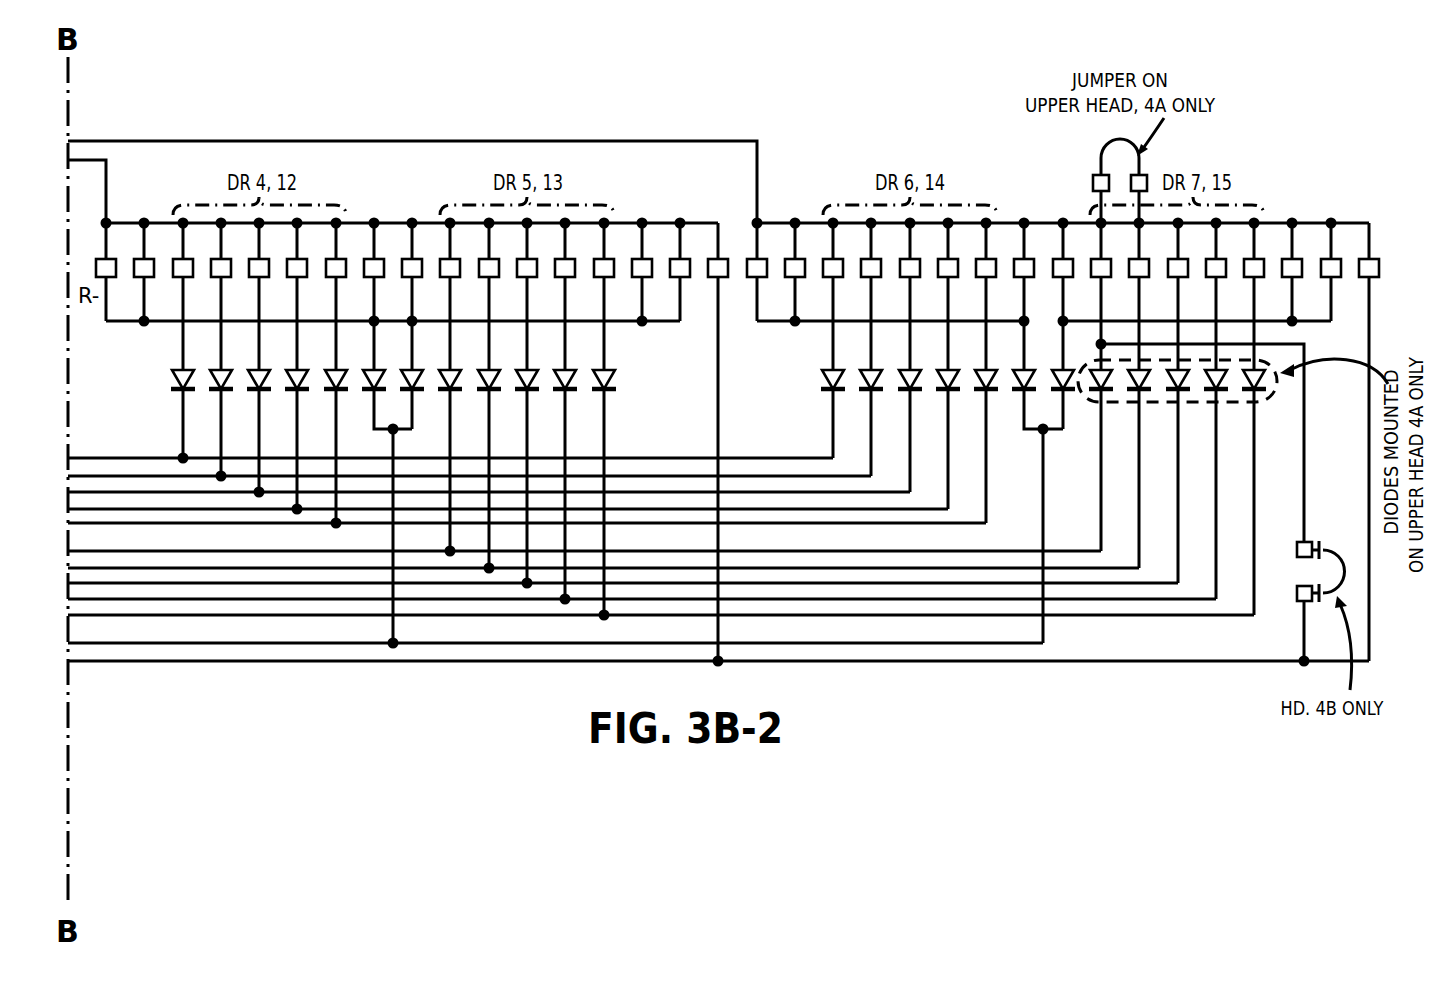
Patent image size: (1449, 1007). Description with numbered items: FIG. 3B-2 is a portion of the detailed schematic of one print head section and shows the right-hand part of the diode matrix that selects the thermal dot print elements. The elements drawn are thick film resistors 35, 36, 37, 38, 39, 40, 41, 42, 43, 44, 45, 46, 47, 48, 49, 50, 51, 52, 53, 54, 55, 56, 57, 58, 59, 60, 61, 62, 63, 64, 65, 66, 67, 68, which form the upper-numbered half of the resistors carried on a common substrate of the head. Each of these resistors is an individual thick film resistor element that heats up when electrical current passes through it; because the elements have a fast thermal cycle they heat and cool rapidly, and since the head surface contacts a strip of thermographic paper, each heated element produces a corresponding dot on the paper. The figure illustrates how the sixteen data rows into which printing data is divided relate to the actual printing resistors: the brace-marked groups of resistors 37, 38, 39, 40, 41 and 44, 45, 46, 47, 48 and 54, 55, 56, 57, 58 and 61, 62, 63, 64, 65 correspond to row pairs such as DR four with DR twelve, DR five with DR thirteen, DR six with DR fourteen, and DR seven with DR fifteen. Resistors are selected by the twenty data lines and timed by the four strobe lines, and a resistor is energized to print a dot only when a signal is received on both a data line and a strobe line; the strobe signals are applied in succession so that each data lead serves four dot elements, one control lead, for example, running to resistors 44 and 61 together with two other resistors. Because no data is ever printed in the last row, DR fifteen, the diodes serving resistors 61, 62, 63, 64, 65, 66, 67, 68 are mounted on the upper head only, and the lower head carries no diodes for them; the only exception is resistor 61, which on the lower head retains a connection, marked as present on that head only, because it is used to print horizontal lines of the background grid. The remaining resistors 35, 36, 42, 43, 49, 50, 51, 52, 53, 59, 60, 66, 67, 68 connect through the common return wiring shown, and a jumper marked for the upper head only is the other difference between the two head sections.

The thick film resistor 35 is at (113, 270).
The thick film resistor 36 is at (151, 272).
The thick film resistor 37 is at (189, 341).
The thick film resistor 38 is at (227, 350).
The thick film resistor 39 is at (265, 358).
The thick film resistor 40 is at (303, 366).
The thick film resistor 41 is at (342, 373).
The thick film resistor 42 is at (387, 433).
The thick film resistor 43 is at (418, 324).
The thick film resistor 44 is at (456, 387).
The thick film resistor 45 is at (495, 396).
The thick film resistor 46 is at (533, 403).
The thick film resistor 47 is at (571, 411).
The thick film resistor 48 is at (610, 419).
The thick film resistor 49 is at (649, 272).
The thick film resistor 50 is at (687, 270).
The thick film resistor 51 is at (725, 445).
The thick film resistor 52 is at (764, 270).
The thick film resistor 53 is at (802, 272).
The thick film resistor 54 is at (839, 338).
The thick film resistor 55 is at (877, 347).
The thick film resistor 56 is at (916, 355).
The thick film resistor 57 is at (954, 364).
The thick film resistor 58 is at (992, 371).
The thick film resistor 59 is at (1037, 431).
The thick film resistor 60 is at (1069, 324).
The thick film resistor 61 is at (1107, 385).
The thick film resistor 62 is at (1145, 393).
The thick film resistor 63 is at (1184, 401).
The thick film resistor 64 is at (1222, 409).
The thick film resistor 65 is at (1260, 417).
The thick film resistor 66 is at (1299, 272).
The thick film resistor 67 is at (1338, 270).
The thick film resistor 68 is at (1376, 442).